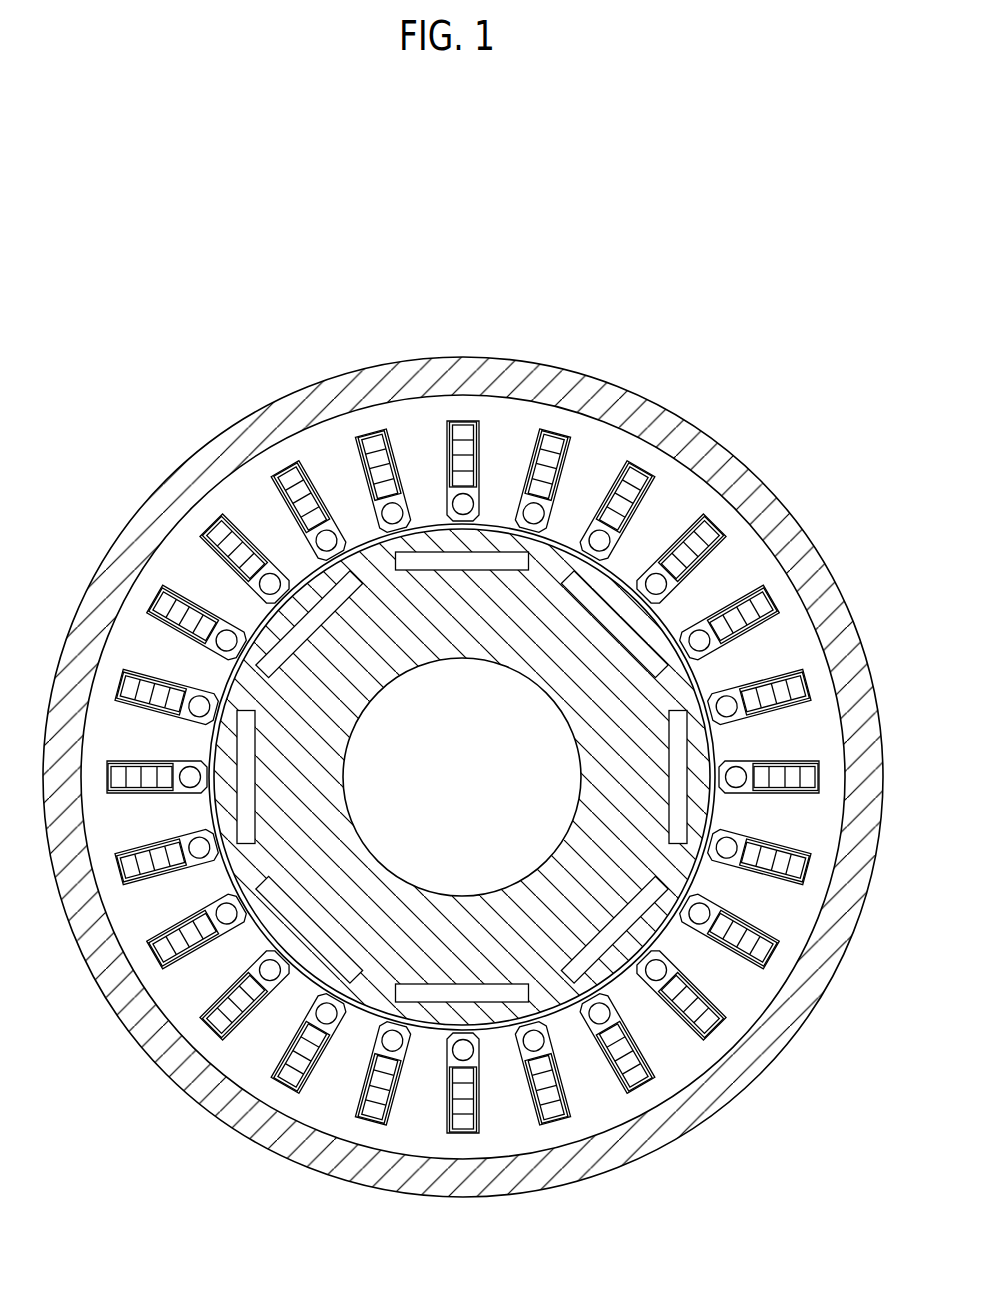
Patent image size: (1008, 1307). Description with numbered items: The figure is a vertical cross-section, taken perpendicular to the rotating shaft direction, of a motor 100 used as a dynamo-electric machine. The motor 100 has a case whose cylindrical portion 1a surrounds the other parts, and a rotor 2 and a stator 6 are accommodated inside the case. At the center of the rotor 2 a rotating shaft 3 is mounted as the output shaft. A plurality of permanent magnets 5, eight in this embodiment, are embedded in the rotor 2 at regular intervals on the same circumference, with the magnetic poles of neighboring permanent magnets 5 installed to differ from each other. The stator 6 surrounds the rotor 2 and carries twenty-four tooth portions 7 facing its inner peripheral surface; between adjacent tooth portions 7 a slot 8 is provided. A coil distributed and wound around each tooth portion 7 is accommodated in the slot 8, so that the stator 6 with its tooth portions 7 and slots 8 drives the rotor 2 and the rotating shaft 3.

The motor 100 is at (153, 355).
The cylindrical portion 1a is at (565, 368).
The rotor 2 is at (523, 563).
The rotating shaft 3 is at (540, 863).
The permanent magnet 5 is at (530, 562).
The stator 6 is at (648, 462).
The tooth portion 7 is at (642, 542).
The slot 8 is at (713, 523).